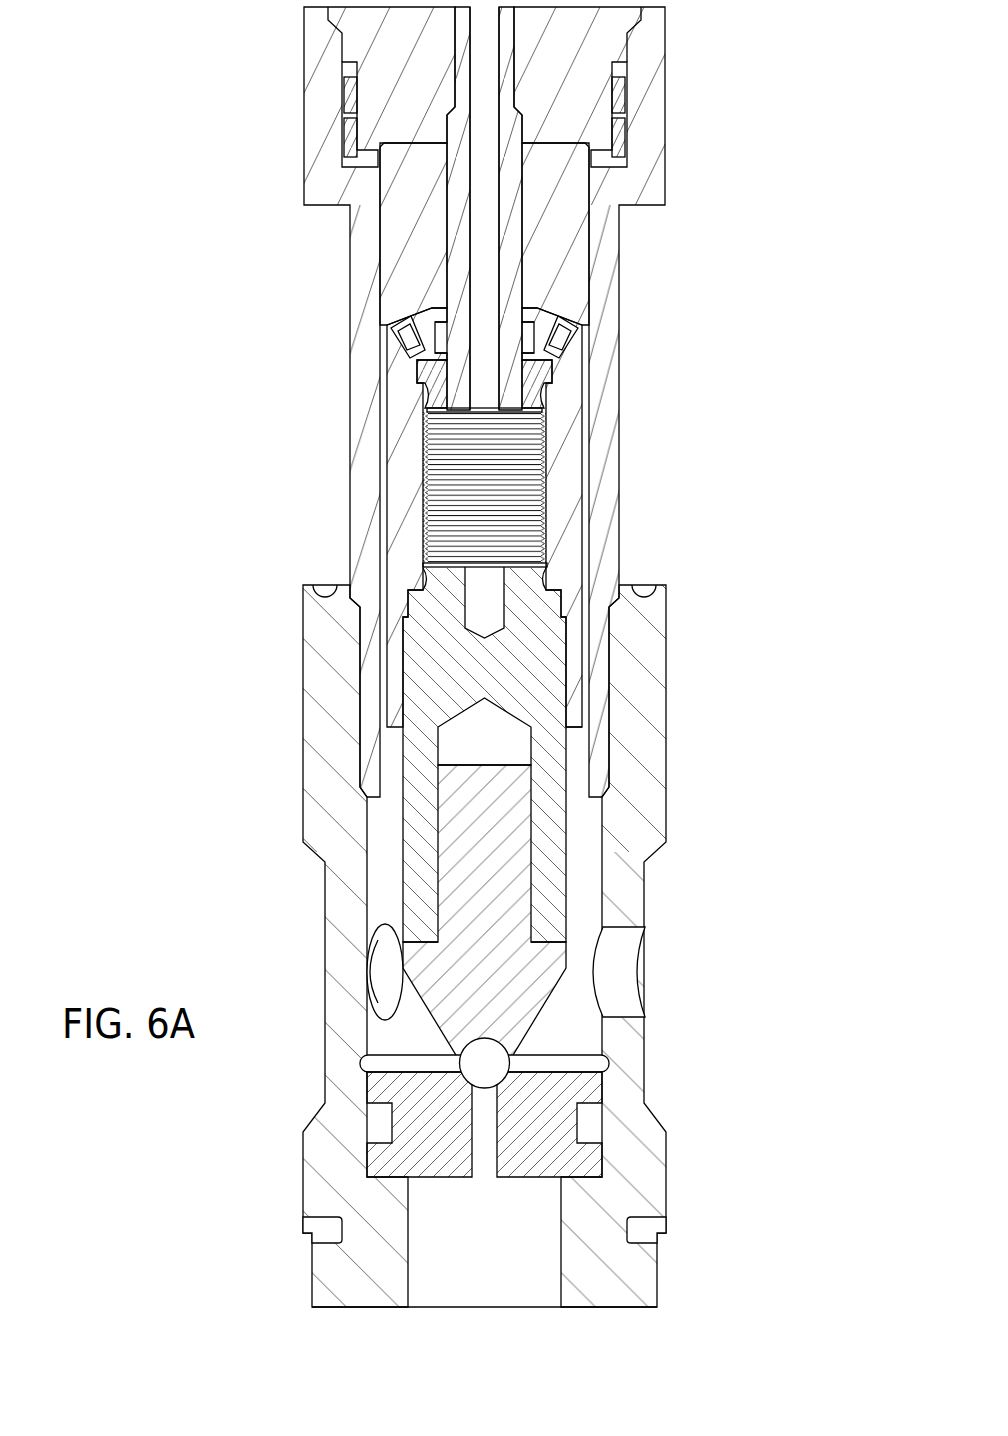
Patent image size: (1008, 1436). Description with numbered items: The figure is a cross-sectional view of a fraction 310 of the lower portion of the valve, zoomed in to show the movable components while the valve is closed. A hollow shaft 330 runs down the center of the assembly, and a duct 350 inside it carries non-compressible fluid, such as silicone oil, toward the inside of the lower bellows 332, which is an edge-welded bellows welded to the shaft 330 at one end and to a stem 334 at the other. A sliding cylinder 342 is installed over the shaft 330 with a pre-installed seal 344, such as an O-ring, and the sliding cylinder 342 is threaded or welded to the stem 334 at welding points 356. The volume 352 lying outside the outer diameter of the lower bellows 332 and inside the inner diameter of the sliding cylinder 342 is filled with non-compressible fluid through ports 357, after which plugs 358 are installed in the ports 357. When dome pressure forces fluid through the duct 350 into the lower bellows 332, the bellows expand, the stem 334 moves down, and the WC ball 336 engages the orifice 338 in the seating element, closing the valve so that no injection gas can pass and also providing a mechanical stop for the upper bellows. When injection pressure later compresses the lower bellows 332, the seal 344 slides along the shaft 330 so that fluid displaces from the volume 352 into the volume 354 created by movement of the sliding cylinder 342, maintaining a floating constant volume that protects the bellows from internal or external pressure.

The fraction of the lower portion 310 is at (481, 657).
The hollow shaft 330 is at (510, 282).
The duct 350 is at (489, 183).
The volume 352 is at (422, 453).
The sliding cylinder 342 is at (573, 670).
The plugs 358 is at (560, 336).
The ports 357 is at (528, 348).
The volume 354 is at (433, 375).
The seal 344 is at (538, 363).
The lower bellows 332 is at (540, 457).
The stem 334 is at (422, 712).
The orifice 338 is at (480, 1123).
The WC ball 336 is at (490, 1066).
The welding points 356 is at (568, 730).